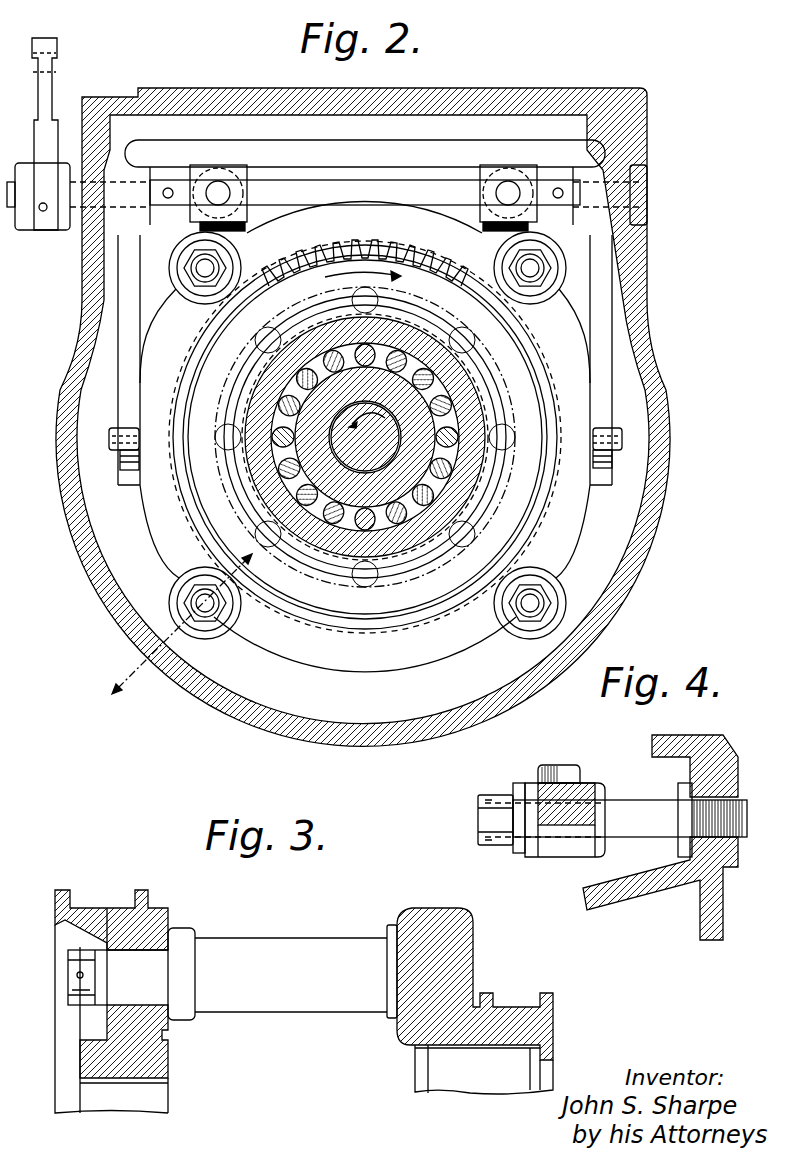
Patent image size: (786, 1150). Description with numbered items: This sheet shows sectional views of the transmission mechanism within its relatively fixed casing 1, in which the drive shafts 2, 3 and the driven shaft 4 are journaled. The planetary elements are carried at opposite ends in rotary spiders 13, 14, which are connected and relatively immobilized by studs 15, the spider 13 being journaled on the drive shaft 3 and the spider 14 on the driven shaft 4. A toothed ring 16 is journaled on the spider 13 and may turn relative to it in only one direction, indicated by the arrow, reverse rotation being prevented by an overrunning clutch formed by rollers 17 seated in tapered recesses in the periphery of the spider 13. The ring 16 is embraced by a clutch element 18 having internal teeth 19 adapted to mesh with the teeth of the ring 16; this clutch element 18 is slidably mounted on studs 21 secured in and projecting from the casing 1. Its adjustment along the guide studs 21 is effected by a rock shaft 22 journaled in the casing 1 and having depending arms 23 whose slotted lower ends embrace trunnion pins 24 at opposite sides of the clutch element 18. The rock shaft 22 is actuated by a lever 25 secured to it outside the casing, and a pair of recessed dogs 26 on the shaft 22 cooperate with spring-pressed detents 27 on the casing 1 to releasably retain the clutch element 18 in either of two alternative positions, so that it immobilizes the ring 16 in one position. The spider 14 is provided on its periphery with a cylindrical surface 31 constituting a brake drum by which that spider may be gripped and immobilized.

In FIG. 2, the casing 1 is at (592, 88).
In FIG. 4, the casing 1 is at (648, 888).
In FIG. 2, the drive shaft 2 is at (462, 472).
In FIG. 2, the drive shaft 3 is at (310, 461).
In FIG. 2, the driven shaft 4 is at (176, 631).
In FIG. 2, the rotary spider 13 is at (485, 369).
In FIG. 3, the rotary spider 13 is at (448, 917).
In FIG. 3, the rotary spider 14 is at (150, 920).
In FIG. 3, the studs 15 is at (290, 940).
In FIG. 2, the toothed ring 16 is at (305, 298).
In FIG. 2, the rollers 17 is at (258, 338).
In FIG. 2, the clutch element 18 is at (382, 238).
In FIG. 4, the clutch element 18 is at (584, 787).
In FIG. 4, the internal teeth 19 is at (553, 766).
In FIG. 2, the studs 21 is at (195, 266).
In FIG. 4, the studs 21 is at (637, 812).
In FIG. 2, the rock shaft 22 is at (366, 184).
In FIG. 2, the depending arms 23 is at (128, 316).
In FIG. 2, the trunnion pins 24 is at (105, 438).
In FIG. 2, the lever 25 is at (50, 60).
In FIG. 2, the recessed dogs 26 is at (247, 227).
In FIG. 2, the spring-pressed detents 27 is at (225, 183).
In FIG. 3, the cylindrical surface 31 is at (84, 908).